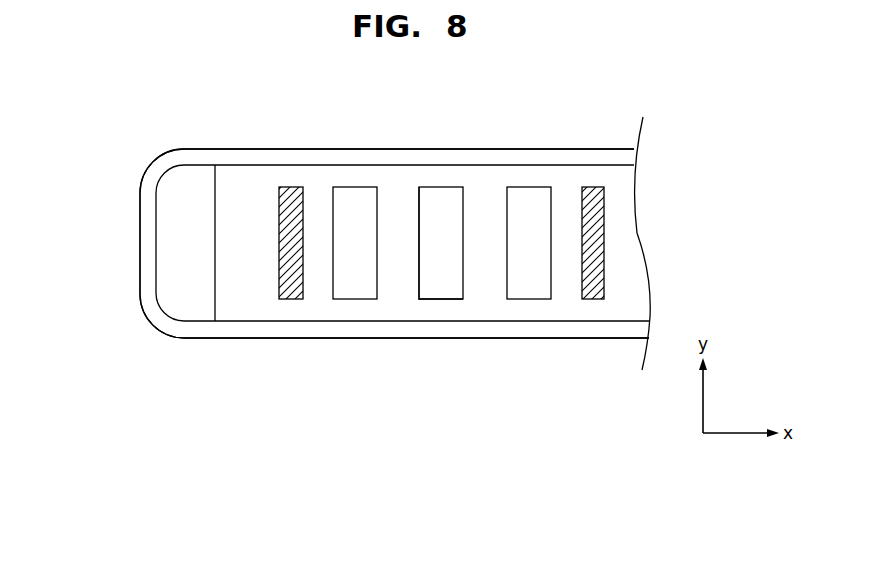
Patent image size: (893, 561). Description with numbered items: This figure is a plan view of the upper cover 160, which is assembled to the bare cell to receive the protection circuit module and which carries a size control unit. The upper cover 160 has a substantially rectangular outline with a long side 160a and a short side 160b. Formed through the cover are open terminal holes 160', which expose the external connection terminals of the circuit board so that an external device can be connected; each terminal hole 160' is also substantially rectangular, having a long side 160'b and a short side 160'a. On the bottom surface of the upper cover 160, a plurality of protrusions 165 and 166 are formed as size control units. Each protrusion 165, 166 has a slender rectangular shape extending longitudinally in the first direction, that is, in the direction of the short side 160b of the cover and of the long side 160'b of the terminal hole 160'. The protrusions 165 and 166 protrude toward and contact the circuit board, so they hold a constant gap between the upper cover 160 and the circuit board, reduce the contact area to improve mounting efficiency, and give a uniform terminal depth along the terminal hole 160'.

The upper cover 160 is at (355, 225).
The long side 160a is at (262, 328).
The short side 160b is at (148, 250).
The terminal hole 160' is at (355, 201).
The short side 160'a is at (456, 301).
The long side 160'b is at (418, 301).
The protrusion 165 is at (293, 187).
The protrusion 166 is at (595, 190).